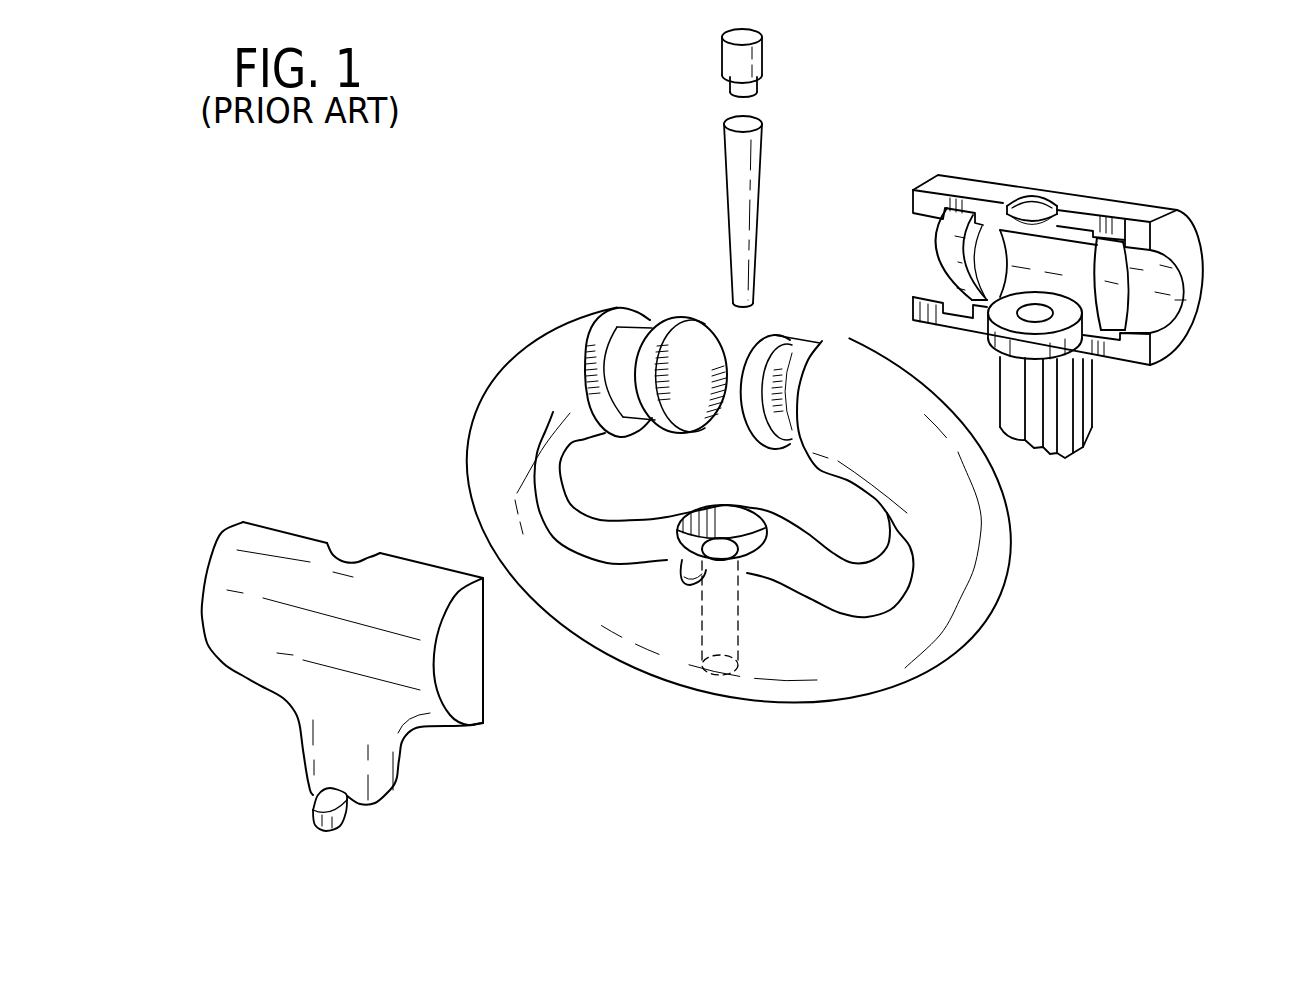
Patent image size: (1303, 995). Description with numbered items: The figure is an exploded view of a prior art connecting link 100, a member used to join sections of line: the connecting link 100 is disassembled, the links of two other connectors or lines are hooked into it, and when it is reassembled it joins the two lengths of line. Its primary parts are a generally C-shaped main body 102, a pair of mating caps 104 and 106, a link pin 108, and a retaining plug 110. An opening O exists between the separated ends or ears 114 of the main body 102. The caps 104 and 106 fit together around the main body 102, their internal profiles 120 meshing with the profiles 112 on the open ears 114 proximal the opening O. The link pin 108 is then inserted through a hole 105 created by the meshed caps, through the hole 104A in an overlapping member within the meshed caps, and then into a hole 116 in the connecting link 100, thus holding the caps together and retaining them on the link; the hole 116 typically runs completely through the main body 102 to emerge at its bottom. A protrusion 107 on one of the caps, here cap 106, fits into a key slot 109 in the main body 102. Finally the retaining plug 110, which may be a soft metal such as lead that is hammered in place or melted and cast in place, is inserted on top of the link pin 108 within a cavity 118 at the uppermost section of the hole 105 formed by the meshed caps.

The connecting link 100 is at (446, 322).
The main body 102 is at (849, 668).
The cap 104 is at (1190, 310).
The hole 104A is at (1043, 320).
The hole 105 is at (368, 548).
The cap 106 is at (224, 573).
The protrusion 107 is at (312, 810).
The link pin 108 is at (737, 172).
The key slot 109 is at (682, 585).
The retaining plug 110 is at (762, 58).
The profiles 112 is at (703, 306).
The ears 114 is at (575, 387).
The hole 116 is at (718, 545).
The cavity 118 is at (342, 548).
The internal profiles 120 is at (973, 282).
The opening O is at (747, 338).